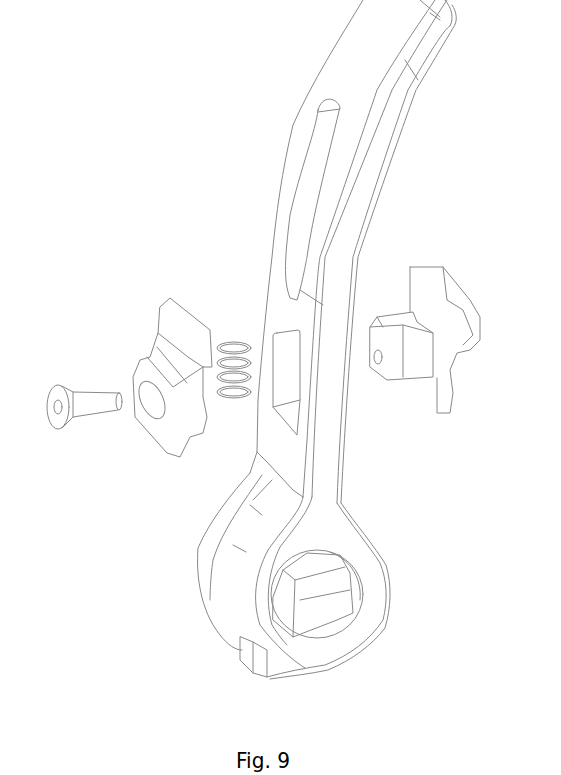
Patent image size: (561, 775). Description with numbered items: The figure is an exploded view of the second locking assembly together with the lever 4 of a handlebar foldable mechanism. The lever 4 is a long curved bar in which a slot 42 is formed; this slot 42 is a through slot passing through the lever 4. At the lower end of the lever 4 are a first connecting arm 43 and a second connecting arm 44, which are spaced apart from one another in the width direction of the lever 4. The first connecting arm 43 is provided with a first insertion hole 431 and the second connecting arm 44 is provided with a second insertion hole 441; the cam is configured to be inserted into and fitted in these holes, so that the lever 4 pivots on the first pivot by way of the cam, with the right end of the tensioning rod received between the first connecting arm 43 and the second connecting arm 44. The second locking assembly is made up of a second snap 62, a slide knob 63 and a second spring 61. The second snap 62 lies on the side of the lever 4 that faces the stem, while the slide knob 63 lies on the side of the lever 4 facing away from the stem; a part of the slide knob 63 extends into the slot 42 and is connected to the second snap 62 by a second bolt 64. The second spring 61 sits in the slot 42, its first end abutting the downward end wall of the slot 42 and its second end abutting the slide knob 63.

The lever 4 is at (393, 113).
The slot 42 is at (293, 393).
The first connecting arm 43 is at (200, 577).
The second connecting arm 44 is at (250, 663).
The first insertion hole 431 is at (290, 578).
The second insertion hole 441 is at (323, 613).
The second spring 61 is at (233, 402).
The second snap 62 is at (160, 307).
The slide knob 63 is at (453, 370).
The second bolt 64 is at (102, 400).